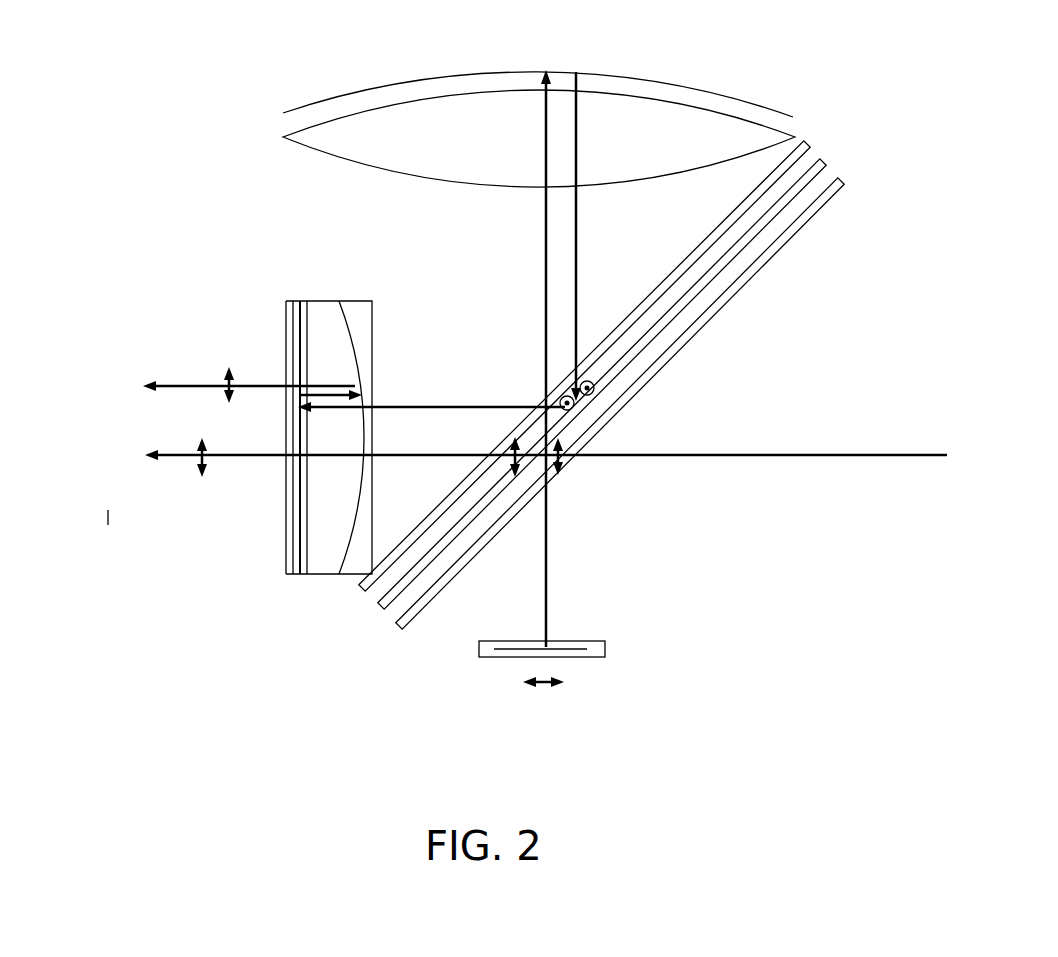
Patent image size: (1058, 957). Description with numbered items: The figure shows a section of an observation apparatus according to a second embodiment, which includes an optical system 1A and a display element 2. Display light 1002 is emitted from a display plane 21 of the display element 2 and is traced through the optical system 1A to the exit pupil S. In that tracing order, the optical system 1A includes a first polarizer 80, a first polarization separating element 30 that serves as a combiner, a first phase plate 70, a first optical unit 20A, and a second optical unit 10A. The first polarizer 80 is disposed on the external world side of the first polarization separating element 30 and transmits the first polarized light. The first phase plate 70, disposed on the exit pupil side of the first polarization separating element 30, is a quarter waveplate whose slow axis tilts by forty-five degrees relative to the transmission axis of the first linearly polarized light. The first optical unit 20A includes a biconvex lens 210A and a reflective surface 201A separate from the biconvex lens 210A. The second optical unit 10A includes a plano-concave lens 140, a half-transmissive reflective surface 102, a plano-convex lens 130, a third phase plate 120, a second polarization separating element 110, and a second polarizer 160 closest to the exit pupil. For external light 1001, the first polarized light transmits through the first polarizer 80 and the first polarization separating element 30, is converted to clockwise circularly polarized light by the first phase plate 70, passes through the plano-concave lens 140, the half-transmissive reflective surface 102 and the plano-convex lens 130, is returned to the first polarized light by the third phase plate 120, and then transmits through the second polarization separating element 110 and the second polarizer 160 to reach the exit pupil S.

The optical system 1A is at (130, 75).
The exit pupil S is at (108, 367).
The first optical unit 20A is at (115, 113).
The reflective surface 201A is at (283, 114).
The biconvex lens 210A is at (288, 137).
The second optical unit 10A is at (383, 270).
The second polarizer 160 is at (288, 530).
The second polarization separating element 110 is at (297, 563).
The third phase plate 120 is at (302, 563).
The plano-convex lens 130 is at (333, 563).
The plano-concave lens 140 is at (358, 563).
The half-transmissive reflective surface 102 is at (337, 312).
The first phase plate 70 is at (380, 573).
The first polarization separating element 30 is at (807, 180).
The first polarizer 80 is at (417, 607).
The external light 1001 is at (855, 455).
The display light 1002 is at (547, 575).
The display plane 21 is at (587, 649).
The display element 2 is at (517, 655).